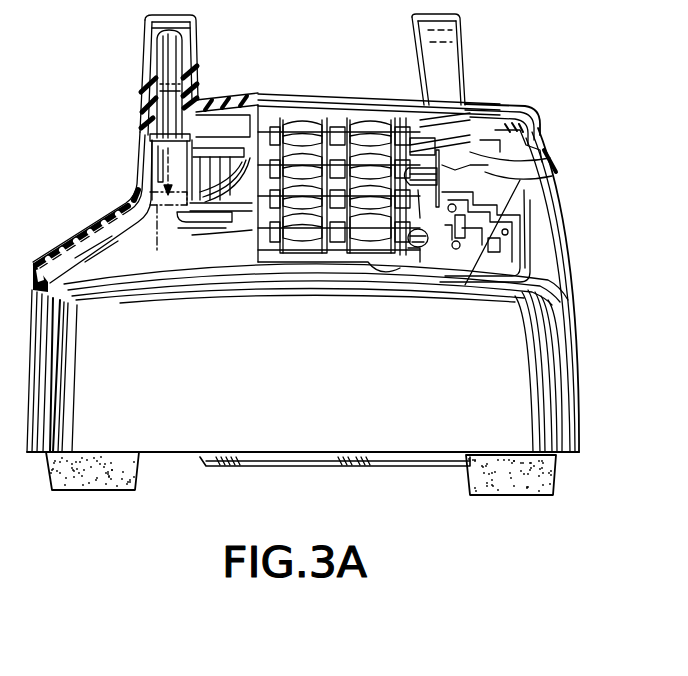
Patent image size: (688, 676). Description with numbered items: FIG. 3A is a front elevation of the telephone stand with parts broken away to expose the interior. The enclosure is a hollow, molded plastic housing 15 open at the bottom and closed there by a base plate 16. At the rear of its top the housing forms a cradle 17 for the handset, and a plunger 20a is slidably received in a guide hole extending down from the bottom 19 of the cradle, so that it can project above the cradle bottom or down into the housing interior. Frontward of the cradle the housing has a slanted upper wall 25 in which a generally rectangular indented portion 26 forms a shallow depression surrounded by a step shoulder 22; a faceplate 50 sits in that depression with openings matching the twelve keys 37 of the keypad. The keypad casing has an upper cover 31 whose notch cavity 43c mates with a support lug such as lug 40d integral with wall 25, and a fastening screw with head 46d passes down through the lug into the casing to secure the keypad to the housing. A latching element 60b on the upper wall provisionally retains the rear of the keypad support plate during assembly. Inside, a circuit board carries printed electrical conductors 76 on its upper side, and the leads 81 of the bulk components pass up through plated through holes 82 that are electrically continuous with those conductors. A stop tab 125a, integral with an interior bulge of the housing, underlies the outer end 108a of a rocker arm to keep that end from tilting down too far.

The housing 15 is at (82, 233).
The base plate 16 is at (350, 468).
The cradle 17 is at (198, 30).
The bottom of cradle 19 is at (152, 83).
The plunger 20a is at (165, 60).
The step shoulder 22 is at (546, 158).
The upper wall 25 is at (537, 122).
The indented portion 26 is at (554, 178).
The upper cover 31 is at (416, 145).
The keys 37 is at (352, 128).
The support lug 40d is at (408, 252).
The notch cavity 43c is at (468, 66).
The screw head 46d is at (418, 205).
The faceplate 50 is at (412, 130).
The latching element 60b is at (447, 186).
The printed electrical conductors 76 is at (522, 209).
The leads 81 is at (478, 197).
The plated through holes 82 is at (522, 258).
The outer end of rocker arm 108a is at (133, 202).
The stop tab 125a is at (177, 220).